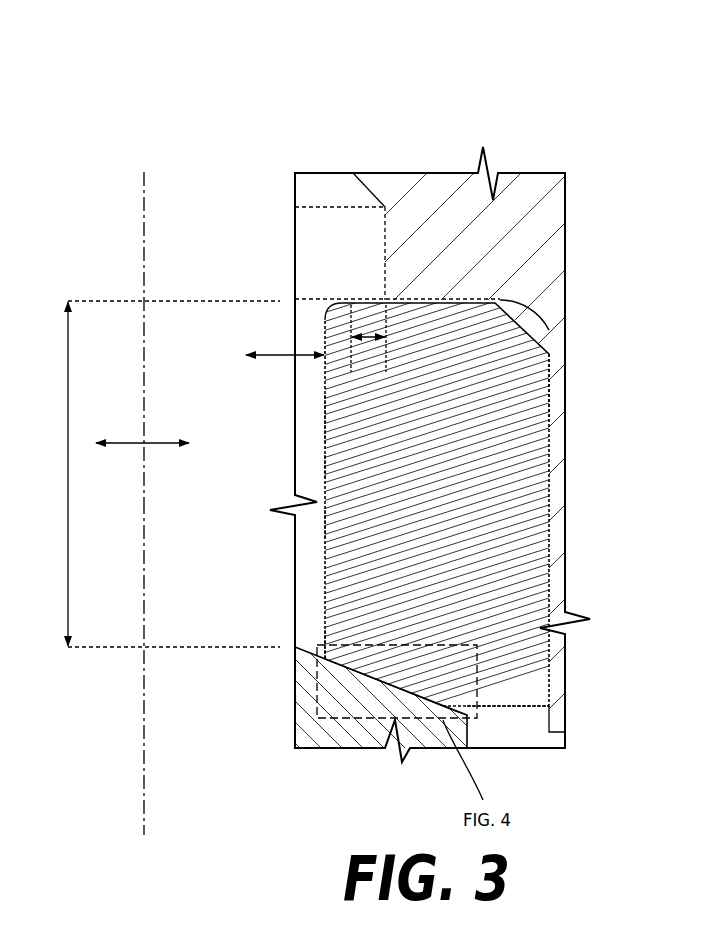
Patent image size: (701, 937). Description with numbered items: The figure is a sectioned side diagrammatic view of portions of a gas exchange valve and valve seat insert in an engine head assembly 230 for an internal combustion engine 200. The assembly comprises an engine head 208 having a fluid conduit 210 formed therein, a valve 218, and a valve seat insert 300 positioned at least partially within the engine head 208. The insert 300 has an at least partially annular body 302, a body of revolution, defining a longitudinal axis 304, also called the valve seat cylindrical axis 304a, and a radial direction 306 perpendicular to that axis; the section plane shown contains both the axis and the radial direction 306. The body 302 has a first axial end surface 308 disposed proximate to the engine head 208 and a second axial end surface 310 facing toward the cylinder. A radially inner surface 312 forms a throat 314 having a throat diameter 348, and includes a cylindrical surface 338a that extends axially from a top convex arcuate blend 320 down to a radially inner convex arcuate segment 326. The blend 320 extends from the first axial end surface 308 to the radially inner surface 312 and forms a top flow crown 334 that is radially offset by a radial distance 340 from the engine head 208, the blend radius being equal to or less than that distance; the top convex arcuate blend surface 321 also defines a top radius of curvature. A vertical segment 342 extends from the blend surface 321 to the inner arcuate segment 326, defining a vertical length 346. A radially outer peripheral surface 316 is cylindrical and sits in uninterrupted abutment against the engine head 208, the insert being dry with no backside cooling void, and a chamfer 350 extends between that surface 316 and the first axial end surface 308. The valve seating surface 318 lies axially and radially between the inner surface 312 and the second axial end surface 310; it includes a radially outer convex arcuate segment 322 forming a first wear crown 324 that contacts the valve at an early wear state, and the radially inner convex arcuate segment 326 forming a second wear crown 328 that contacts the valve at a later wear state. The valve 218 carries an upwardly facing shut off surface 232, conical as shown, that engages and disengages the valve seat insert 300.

The internal combustion engine 200 is at (517, 67).
The engine head assembly 230 is at (542, 137).
The engine head 208 is at (553, 250).
The fluid conduit 210 is at (342, 232).
The valve 218 is at (310, 737).
The upwardly facing shut off surface 232 is at (383, 675).
The valve seat insert 300 is at (553, 497).
The annular body 302 is at (505, 580).
The longitudinal axis 304 is at (152, 780).
The valve seat cylindrical axis 304a is at (152, 199).
The radial direction 306 is at (157, 445).
The first axial end surface 308 is at (379, 300).
The second axial end surface 310 is at (490, 707).
The radially inner surface 312 is at (330, 468).
The throat 314 is at (327, 410).
The radially outer peripheral surface 316 is at (553, 421).
The valve seating surface 318 is at (410, 667).
The top convex arcuate blend 320 is at (328, 315).
The top convex arcuate blend surface 321 is at (343, 296).
The radially outer convex arcuate segment 322 is at (463, 693).
The first wear crown 324 is at (447, 683).
The radially inner convex arcuate segment 326 is at (336, 655).
The second wear crown 328 is at (328, 648).
The top flow crown 334 is at (347, 297).
The cylindrical surface 338a is at (330, 527).
The radial distance 340 is at (370, 338).
The vertical segment 342 is at (330, 437).
The vertical length 346 is at (68, 378).
The throat diameter 348 is at (283, 355).
The chamfer 350 is at (548, 335).